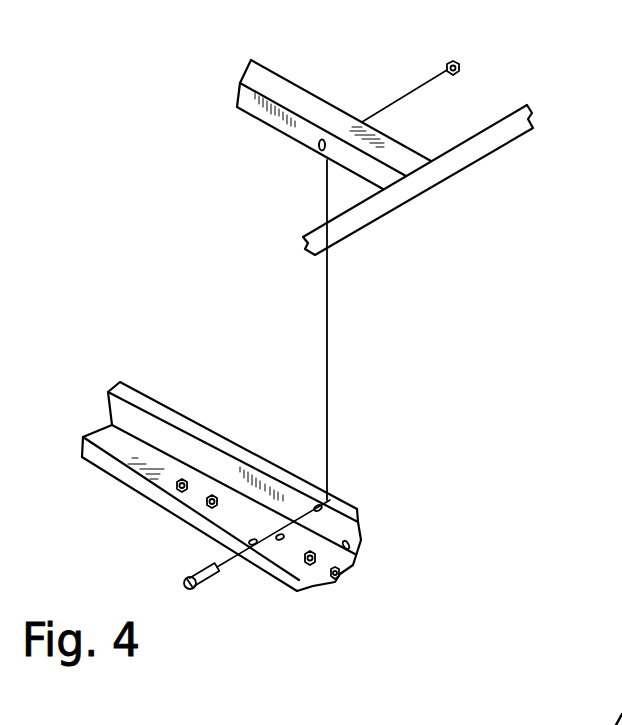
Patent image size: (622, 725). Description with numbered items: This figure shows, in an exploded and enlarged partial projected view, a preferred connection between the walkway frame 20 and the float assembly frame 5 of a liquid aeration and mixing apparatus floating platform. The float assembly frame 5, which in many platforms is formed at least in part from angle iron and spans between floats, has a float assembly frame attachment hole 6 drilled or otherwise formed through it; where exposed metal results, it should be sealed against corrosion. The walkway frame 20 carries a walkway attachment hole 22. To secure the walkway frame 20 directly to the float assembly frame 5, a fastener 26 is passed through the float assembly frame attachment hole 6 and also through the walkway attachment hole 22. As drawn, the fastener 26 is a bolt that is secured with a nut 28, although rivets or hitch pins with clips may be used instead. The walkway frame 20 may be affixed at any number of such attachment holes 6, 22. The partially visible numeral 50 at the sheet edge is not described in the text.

The mounting bracket 5 is at (115, 386).
The mounting hole 6 is at (328, 501).
The rail 20 is at (531, 122).
The slot 22 is at (318, 144).
The bolt 26 is at (183, 579).
The nut 28 is at (463, 61).
The assembly 50 is at (607, 342).